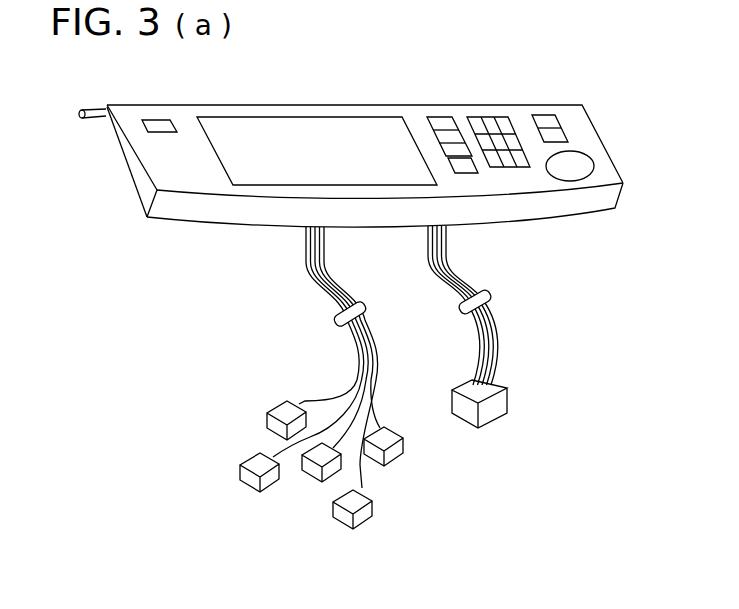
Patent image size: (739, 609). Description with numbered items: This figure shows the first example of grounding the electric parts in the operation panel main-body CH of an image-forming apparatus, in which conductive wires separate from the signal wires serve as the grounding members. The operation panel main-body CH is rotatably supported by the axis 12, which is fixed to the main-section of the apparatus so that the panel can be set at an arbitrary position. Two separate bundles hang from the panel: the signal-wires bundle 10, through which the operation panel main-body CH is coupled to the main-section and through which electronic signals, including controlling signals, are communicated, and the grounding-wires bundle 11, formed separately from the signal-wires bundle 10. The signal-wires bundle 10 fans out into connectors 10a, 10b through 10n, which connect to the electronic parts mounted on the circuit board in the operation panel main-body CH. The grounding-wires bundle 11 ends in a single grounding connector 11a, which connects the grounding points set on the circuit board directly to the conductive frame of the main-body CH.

The operation panel main-body CH is at (331, 128).
The axis 12 is at (92, 120).
The signal-wires bundle 10 is at (308, 281).
The connector 10a is at (276, 404).
The connector 10b is at (252, 482).
The connector 10n is at (345, 513).
The grounding-wires bundle 11 is at (493, 320).
The grounding connector 11a is at (508, 398).